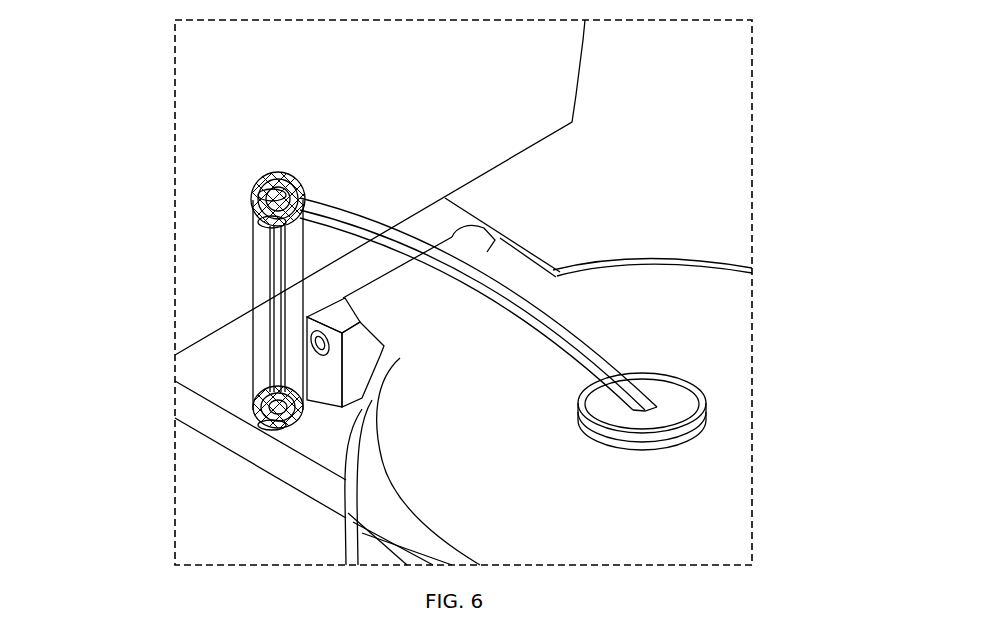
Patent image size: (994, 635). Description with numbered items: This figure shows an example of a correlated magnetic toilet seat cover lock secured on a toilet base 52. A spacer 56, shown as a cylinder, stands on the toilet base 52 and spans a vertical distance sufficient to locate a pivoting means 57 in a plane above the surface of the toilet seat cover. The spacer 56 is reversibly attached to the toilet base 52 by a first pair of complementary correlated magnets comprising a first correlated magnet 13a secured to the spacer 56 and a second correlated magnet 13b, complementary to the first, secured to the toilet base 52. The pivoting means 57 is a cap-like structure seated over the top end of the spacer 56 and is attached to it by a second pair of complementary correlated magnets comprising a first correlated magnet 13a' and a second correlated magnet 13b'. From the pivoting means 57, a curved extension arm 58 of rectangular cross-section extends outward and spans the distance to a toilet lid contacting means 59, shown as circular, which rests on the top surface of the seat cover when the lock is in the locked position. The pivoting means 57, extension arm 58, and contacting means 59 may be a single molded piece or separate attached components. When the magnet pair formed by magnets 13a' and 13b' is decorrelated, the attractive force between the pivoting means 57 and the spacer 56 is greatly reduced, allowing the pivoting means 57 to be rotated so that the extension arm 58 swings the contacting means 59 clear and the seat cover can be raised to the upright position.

The toilet base 52 is at (313, 443).
The spacer 56 is at (255, 298).
The pivoting means 57 is at (276, 177).
The first correlated magnet 13a' is at (160, 189).
The second correlated magnet 13b' is at (160, 240).
The first correlated magnet 13a is at (189, 410).
The second correlated magnet 13b is at (179, 457).
The extension arm 58 is at (518, 274).
The toilet lid contacting means 59 is at (688, 390).